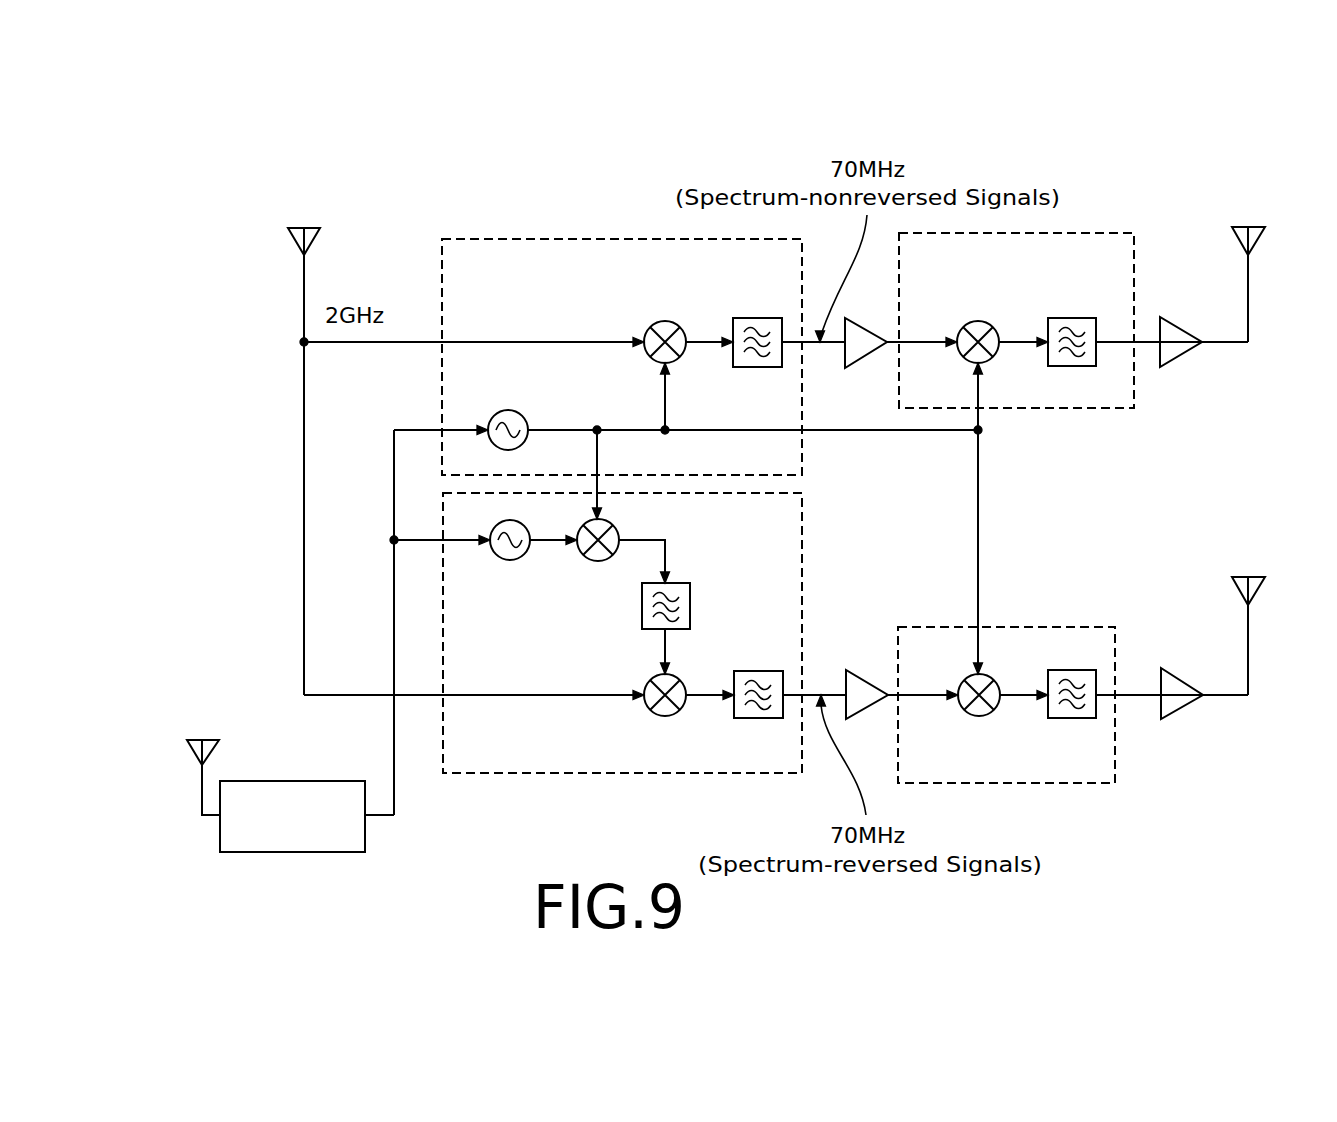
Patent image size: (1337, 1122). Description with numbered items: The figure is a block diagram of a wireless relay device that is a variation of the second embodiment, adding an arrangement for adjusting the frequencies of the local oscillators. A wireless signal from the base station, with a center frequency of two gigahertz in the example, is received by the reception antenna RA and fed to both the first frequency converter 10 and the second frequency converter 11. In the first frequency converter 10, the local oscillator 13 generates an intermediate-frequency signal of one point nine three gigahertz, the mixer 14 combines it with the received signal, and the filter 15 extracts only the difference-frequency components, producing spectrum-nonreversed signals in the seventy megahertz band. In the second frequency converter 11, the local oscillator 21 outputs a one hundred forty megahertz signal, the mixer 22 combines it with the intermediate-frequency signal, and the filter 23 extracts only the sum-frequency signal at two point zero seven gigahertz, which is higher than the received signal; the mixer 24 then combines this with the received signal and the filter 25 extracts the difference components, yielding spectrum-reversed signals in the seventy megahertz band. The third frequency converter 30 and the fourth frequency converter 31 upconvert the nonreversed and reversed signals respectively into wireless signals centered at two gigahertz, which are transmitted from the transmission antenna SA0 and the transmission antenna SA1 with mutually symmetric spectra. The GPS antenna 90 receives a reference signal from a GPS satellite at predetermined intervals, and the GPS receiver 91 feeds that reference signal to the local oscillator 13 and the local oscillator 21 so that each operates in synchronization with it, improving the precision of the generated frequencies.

The first frequency converter 10 is at (500, 237).
The second frequency converter 11 is at (500, 776).
The local oscillator 13 is at (530, 414).
The mixer 14 is at (663, 320).
The filter 15 is at (756, 316).
The local oscillator 21 is at (510, 562).
The mixer 22 is at (598, 562).
The filter 23 is at (695, 598).
The mixer 24 is at (648, 680).
The filter 25 is at (757, 722).
The third frequency converter 30 is at (1072, 410).
The fourth frequency converter 31 is at (1075, 785).
The GPS antenna 90 is at (200, 789).
The GPS receiver 91 is at (295, 855).
The reception antenna RA is at (302, 297).
The transmission antenna SA0 is at (1250, 297).
The transmission antenna SA1 is at (1252, 650).